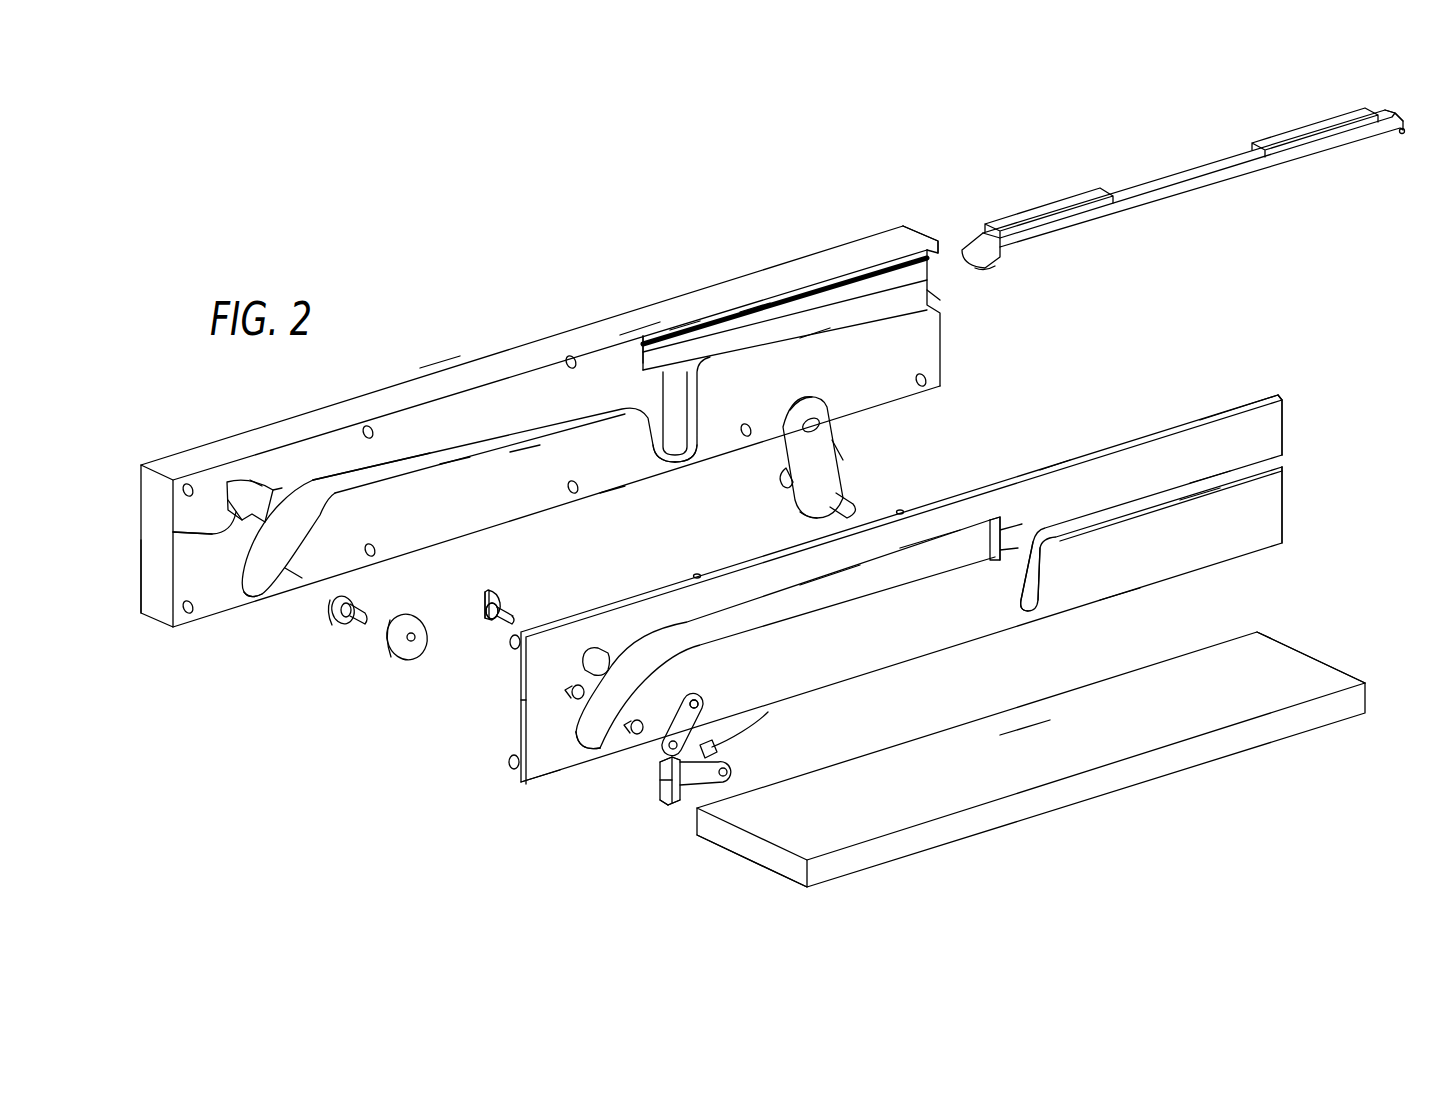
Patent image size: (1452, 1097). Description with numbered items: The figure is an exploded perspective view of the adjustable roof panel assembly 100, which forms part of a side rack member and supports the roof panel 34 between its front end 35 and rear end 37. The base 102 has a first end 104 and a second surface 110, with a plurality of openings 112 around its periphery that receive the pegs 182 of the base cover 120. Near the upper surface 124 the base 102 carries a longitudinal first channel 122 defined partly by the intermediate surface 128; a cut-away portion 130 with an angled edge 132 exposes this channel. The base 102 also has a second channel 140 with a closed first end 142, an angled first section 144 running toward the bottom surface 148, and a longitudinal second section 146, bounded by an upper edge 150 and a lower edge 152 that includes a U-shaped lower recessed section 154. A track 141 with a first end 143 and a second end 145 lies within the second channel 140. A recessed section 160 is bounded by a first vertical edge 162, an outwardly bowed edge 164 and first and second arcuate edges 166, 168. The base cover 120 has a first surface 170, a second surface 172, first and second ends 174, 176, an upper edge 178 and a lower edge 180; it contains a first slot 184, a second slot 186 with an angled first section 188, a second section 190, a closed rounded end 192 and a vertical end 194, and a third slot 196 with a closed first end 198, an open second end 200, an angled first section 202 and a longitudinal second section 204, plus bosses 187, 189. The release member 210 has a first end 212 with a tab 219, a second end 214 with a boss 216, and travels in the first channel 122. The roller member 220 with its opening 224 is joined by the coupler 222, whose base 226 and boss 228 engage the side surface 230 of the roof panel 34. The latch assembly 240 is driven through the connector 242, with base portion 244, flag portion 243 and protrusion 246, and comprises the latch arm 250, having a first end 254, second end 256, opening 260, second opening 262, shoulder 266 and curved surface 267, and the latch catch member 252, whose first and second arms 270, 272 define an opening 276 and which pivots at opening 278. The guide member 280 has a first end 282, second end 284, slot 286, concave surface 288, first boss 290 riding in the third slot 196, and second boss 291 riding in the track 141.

The roof panel 34 is at (1072, 808).
The front end 35 is at (1318, 660).
The rear end 37 is at (745, 852).
The roof panel assembly 100 is at (812, 212).
The base 102 is at (523, 332).
The first end 104 is at (152, 485).
The second surface 110 is at (140, 572).
The openings 112 is at (364, 425).
The base cover 120 is at (1144, 424).
The first channel 122 is at (752, 303).
The upper surface 124 is at (645, 322).
The intermediate surface 128 is at (895, 282).
The cut-away portion 130 is at (683, 318).
The angled edge 132 is at (645, 343).
The second channel 140 is at (430, 440).
The track 141 is at (812, 333).
The closed first end 142 is at (245, 600).
The first end 143 is at (656, 453).
The angled first section 144 is at (302, 580).
The second end 145 is at (932, 298).
The longitudinal second section 146 is at (522, 455).
The bottom surface 148 is at (610, 490).
The upper edge 150 is at (448, 360).
The lower edge 152 is at (455, 466).
The lower recessed section 154 is at (681, 460).
The recessed section 160 is at (242, 490).
The first vertical edge 162 is at (222, 498).
The outwardly bowed edge 164 is at (282, 485).
The first arcuate edge 166 is at (173, 531).
The second arcuate edge 168 is at (262, 484).
The first surface 170 is at (1265, 515).
The second surface 172 is at (520, 720).
The first end 174 is at (518, 777).
The second end 176 is at (1285, 490).
The upper edge 178 is at (1058, 462).
The lower edge 180 is at (1118, 591).
The pegs 182 is at (512, 648).
The first slot 184 is at (597, 647).
The second slot 186 is at (941, 540).
The boss 187 is at (570, 692).
The angled first section 188 is at (633, 710).
The boss 189 is at (632, 733).
The second section 190 is at (833, 613).
The closed rounded end 192 is at (585, 750).
The vertical end 194 is at (1010, 500).
The third slot 196 is at (1200, 483).
The closed first end 198 is at (1022, 616).
The open second end 200 is at (1280, 462).
The angled first section 202 is at (1014, 585).
The longitudinal second section 204 is at (1195, 497).
The release member 210 is at (1127, 197).
The first end 212 is at (968, 249).
The second end 214 is at (1398, 115).
The boss 216 is at (1403, 135).
The tab 219 is at (990, 270).
The roller member 220 is at (381, 663).
The coupler 222 is at (332, 630).
The opening 224 is at (416, 628).
The base 226 is at (356, 600).
The boss 228 is at (366, 621).
The side surface 230 is at (1025, 706).
The latch assembly 240 is at (797, 719).
The connector 242 is at (504, 591).
The flag portion 243 is at (486, 598).
The base portion 244 is at (512, 638).
The protrusion 246 is at (516, 614).
The latch arm 250 is at (630, 796).
The latch catch member 252 is at (754, 759).
The first end 254 is at (701, 702).
The second end 256 is at (666, 802).
The opening 260 is at (663, 759).
The second opening 262 is at (697, 697).
The shoulder 266 is at (654, 792).
The curved surface 267 is at (712, 722).
The first arm 270 is at (689, 812).
The second arm 272 is at (768, 712).
The opening 276 is at (728, 748).
The opening 278 is at (734, 771).
The guide member 280 is at (853, 477).
The first end 282 is at (803, 403).
The second end 284 is at (813, 516).
The slot 286 is at (822, 428).
The surface 288 is at (846, 447).
The first boss 290 is at (856, 496).
The second boss 291 is at (780, 478).